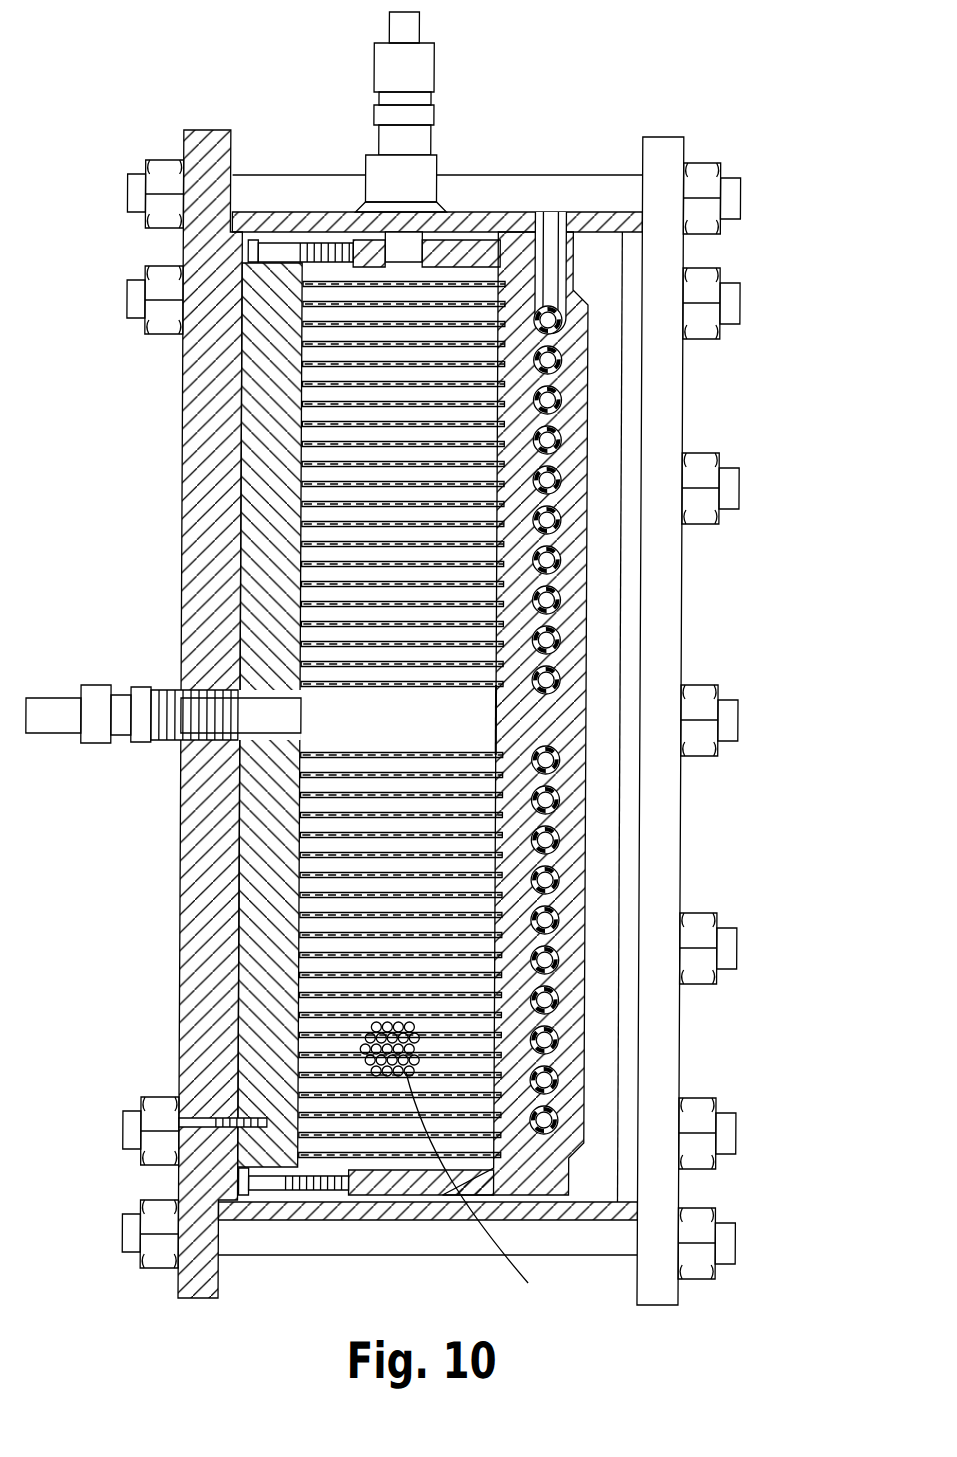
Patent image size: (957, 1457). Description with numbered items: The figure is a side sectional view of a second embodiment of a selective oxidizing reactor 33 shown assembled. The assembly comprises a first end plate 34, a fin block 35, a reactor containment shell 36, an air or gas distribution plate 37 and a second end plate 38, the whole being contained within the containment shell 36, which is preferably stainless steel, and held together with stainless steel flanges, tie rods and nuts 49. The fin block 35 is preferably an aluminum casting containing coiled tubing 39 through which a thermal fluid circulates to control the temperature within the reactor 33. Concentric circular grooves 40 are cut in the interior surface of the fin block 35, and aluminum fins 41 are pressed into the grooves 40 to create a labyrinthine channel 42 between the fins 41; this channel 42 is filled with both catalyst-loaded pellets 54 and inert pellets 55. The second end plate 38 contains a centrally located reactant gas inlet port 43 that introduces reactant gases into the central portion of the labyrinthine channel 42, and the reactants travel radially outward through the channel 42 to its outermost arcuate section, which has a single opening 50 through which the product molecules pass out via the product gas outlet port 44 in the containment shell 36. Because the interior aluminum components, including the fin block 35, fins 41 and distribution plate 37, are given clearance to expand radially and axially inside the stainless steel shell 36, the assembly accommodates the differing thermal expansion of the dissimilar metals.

The reactor 33 is at (752, 437).
The first end plate 34 is at (662, 125).
The fin block 35 is at (601, 332).
The reactor containment shell 36 is at (295, 200).
The air or gas distribution plate 37 is at (262, 415).
The second end plate 38 is at (202, 1309).
The coiled tubing 39 is at (575, 560).
The concentric circular grooves 40 is at (522, 701).
The fins 41 is at (461, 864).
The labyrinthine channel 42 is at (458, 943).
The reactant gas inlet port 43 is at (52, 704).
The product gas outlet port 44 is at (392, 20).
The nuts 49 is at (162, 270).
The single opening 50 is at (430, 237).
The catalyst-loaded pellets 54 is at (494, 1189).
The inert pellets 55 is at (415, 1062).